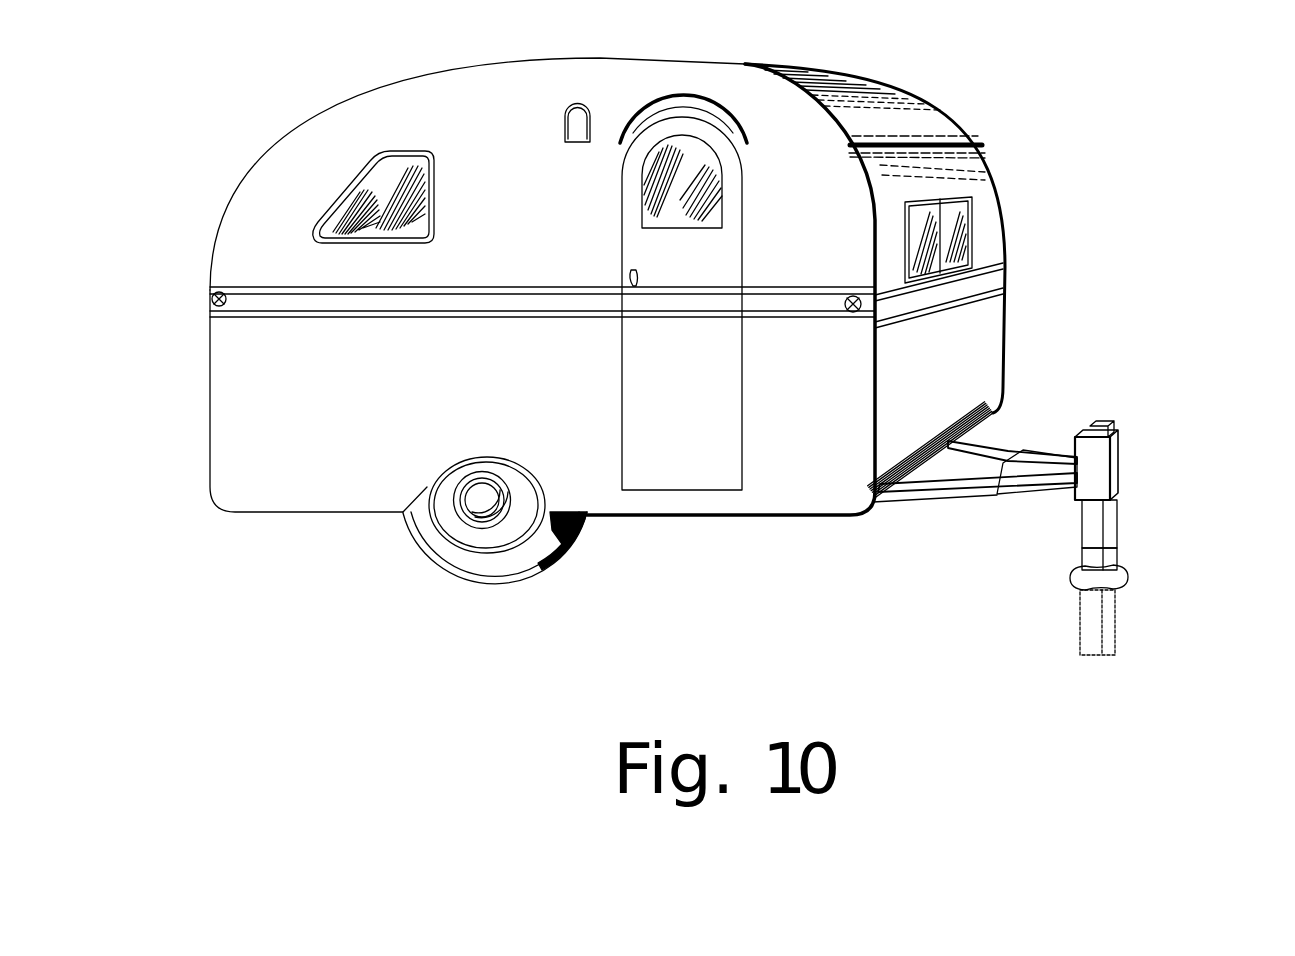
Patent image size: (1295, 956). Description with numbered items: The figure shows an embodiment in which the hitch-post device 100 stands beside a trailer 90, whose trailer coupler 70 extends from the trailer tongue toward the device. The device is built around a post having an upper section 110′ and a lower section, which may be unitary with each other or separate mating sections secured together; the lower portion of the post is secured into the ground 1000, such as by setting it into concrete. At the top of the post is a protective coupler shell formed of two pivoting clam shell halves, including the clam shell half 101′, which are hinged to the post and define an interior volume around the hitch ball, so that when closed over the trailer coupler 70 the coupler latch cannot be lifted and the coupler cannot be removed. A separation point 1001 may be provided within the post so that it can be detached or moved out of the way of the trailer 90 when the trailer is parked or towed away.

The trailer 90 is at (533, 398).
The trailer coupler 70 is at (1067, 460).
The trailer jack assembly 100 is at (1106, 392).
The clam shell half 101′ is at (1097, 452).
The upper section of the post 110′ is at (1117, 517).
The separation point 1001 is at (1083, 543).
The ground 1000 is at (1123, 580).